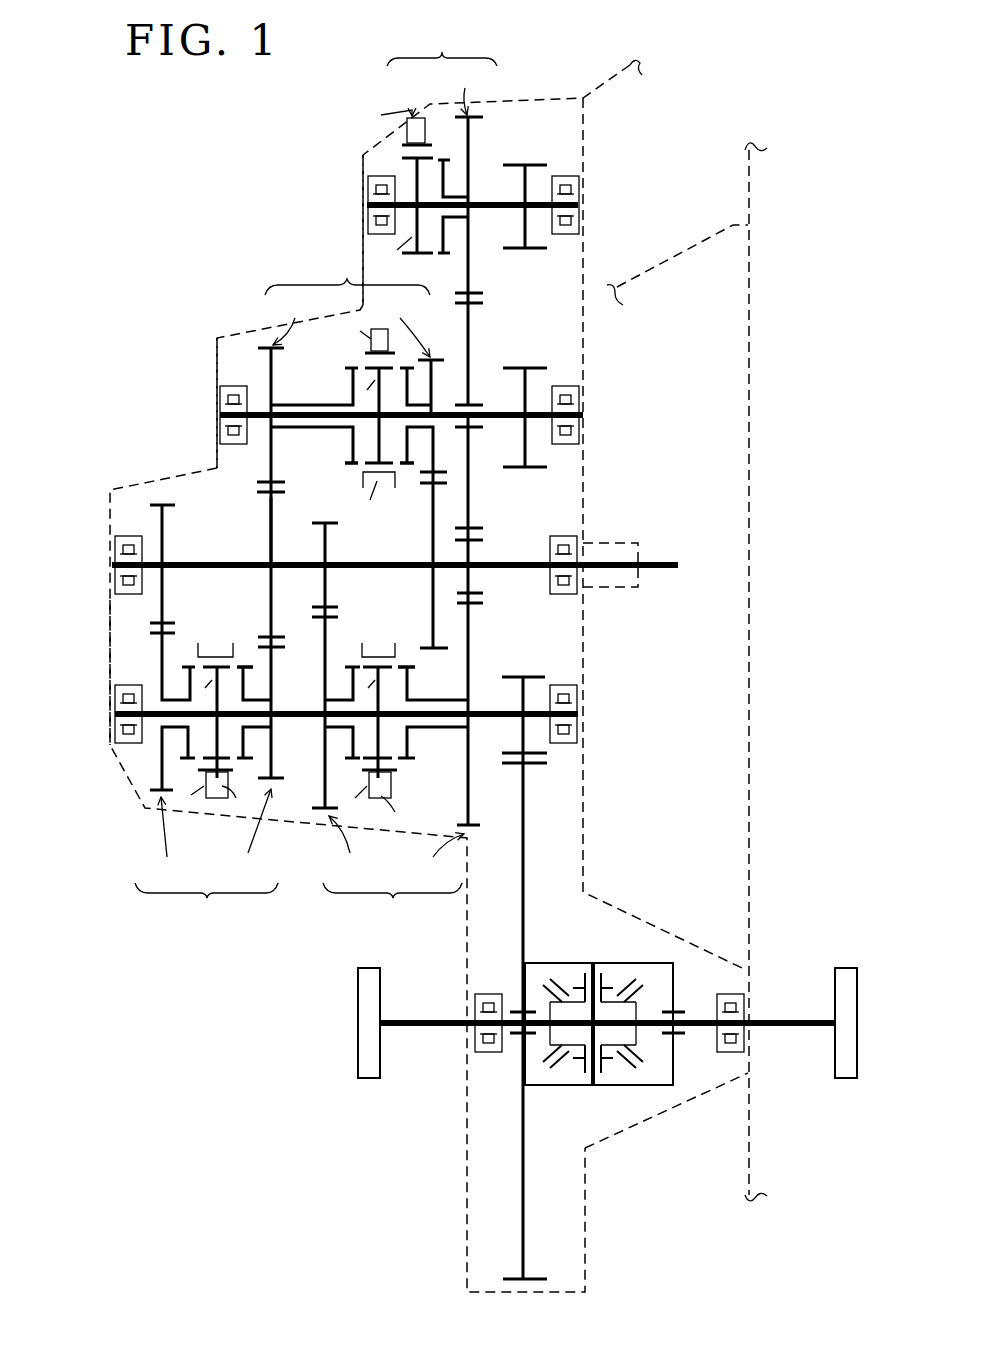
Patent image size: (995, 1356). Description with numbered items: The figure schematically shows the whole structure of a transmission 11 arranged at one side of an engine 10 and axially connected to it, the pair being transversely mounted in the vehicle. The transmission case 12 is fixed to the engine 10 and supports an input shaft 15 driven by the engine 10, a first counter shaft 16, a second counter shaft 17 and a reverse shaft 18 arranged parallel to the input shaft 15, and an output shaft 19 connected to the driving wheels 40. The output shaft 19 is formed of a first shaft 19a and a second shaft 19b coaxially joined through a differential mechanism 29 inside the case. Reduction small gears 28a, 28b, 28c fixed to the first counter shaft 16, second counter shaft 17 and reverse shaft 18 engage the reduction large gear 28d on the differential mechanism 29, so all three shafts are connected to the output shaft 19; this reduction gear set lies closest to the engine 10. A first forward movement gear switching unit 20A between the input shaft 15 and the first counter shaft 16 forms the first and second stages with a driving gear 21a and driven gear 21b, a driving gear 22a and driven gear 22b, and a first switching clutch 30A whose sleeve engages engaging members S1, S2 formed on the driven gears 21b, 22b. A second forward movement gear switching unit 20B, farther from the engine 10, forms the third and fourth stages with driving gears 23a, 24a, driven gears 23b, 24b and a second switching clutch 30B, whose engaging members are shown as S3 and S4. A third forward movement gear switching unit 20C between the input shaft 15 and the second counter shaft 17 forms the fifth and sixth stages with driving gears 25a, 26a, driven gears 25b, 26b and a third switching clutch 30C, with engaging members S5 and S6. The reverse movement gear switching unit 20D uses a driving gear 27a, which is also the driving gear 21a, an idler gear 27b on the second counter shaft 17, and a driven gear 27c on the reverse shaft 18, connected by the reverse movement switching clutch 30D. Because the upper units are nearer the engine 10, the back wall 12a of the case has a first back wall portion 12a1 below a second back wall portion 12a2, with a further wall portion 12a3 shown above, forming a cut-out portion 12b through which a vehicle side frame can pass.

The engine 10 is at (745, 157).
The transmission 11 is at (140, 442).
The transmission case 12 is at (530, 98).
The back wall 12a is at (103, 527).
The first back wall portion 12a1 is at (108, 632).
The second back wall portion 12a2 is at (216, 420).
The housing wall 12a3 is at (360, 183).
The cut-out portion 12b is at (188, 292).
The input shaft 15 is at (608, 560).
The first counter shaft 16 is at (490, 722).
The second counter shaft 17 is at (478, 421).
The reverse shaft 18 is at (497, 200).
The output shaft 19 is at (758, 1022).
The first shaft 19a is at (438, 1025).
The second shaft 19b is at (772, 1027).
The first forward movement gear switching unit 20A is at (393, 870).
The second forward movement gear switching unit 20B is at (206, 857).
The third forward movement gear switching unit 20C is at (347, 307).
The reverse movement gear switching unit 20D is at (457, 73).
The driving gear 21a is at (509, 530).
The driven gear 21b is at (470, 636).
The driving gear 22a is at (328, 552).
The driven gear 22b is at (320, 633).
The driving gear 23a is at (163, 587).
The driven gear 23b is at (162, 642).
The driving gear 24a is at (270, 533).
The driven gear 24b is at (273, 666).
The driving gear 25a is at (230, 531).
The driven gear 25b is at (272, 452).
The driving gear 26a is at (433, 596).
The driven gear 26b is at (433, 378).
The driving gear 27a is at (470, 556).
The idler gear 27b is at (472, 340).
The driven gear 27c is at (470, 262).
The reduction small gear 28a is at (533, 677).
The reduction small gear 28b is at (515, 368).
The reduction small gear 28c is at (527, 163).
The reduction large gear 28d is at (527, 892).
The differential mechanism 29 is at (577, 1090).
The first switching clutch 30A is at (405, 775).
The second switching clutch 30B is at (218, 802).
The third switching clutch 30C is at (350, 378).
The reverse movement switching clutch 30D is at (416, 115).
The driving wheels 40 is at (358, 1023).
The engaging member S1 is at (403, 663).
The engaging member S2 is at (347, 663).
The synchronizer sleeve S3 is at (185, 663).
The synchronizer sleeve S4 is at (247, 663).
The synchronizer sleeve S5 is at (353, 465).
The synchronizer sleeve S6 is at (407, 468).